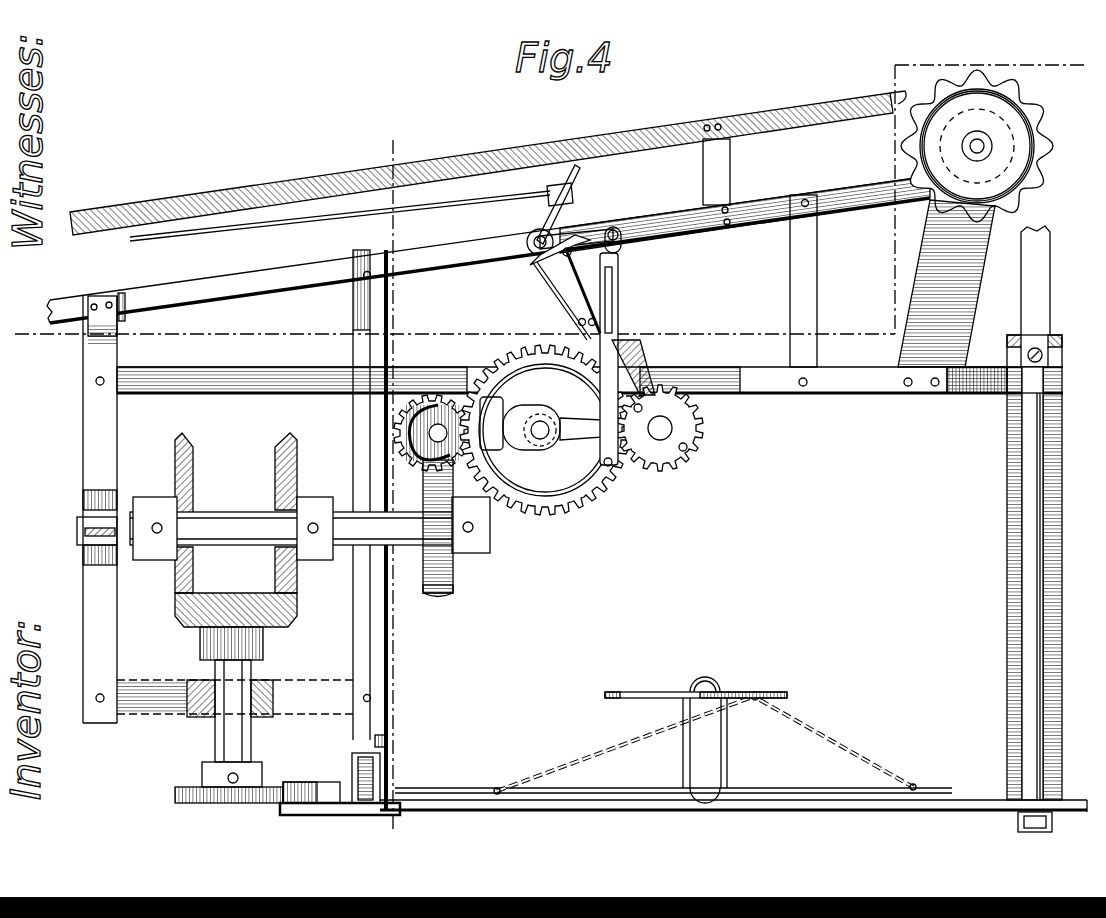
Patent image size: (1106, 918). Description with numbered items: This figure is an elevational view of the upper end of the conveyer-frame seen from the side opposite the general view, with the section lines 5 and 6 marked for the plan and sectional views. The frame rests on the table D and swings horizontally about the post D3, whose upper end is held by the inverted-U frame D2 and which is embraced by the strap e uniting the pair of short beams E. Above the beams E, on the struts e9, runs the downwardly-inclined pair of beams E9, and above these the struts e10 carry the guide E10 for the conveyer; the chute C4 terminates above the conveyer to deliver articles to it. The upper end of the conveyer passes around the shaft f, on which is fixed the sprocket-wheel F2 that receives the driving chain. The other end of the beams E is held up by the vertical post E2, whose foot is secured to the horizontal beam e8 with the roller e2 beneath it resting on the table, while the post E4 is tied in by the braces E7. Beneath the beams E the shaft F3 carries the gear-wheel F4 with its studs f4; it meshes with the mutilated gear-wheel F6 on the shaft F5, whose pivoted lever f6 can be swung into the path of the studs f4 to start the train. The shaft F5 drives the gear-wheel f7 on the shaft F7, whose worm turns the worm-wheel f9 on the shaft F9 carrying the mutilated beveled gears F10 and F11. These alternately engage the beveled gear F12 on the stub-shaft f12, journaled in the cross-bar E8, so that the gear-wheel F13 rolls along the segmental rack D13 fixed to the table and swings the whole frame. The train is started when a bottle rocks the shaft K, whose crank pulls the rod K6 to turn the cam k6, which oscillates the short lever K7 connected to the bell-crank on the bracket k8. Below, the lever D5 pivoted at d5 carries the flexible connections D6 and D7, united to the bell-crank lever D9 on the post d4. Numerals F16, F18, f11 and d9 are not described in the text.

The guide E10 is at (333, 153).
The rod K6 is at (297, 222).
The section line 6 6 is at (423, 147).
The pair of beams E9 is at (313, 277).
The struts e9 is at (117, 355).
The struts e10 is at (728, 163).
The section line 5 5 is at (1090, 42).
The post E4 is at (93, 457).
The vertical post E2 is at (383, 637).
The pair of short beams E is at (793, 410).
The sprocket-wheel F2 is at (1037, 113).
The shaft f is at (977, 146).
The chute C4 is at (1043, 288).
The frame D2 is at (1007, 477).
The post D3 is at (1030, 522).
The strap e is at (987, 393).
The mutilated beveled gear F10 is at (207, 427).
The mutilated beveled gear F11 is at (283, 447).
The beveled gear F12 is at (247, 580).
The shaft F9 is at (228, 520).
The shaft bearing on upright F16 is at (87, 527).
The stub-shaft f12 is at (230, 735).
The cross-bar E8 is at (213, 720).
The braces E7 is at (303, 683).
The gear-wheel F13 is at (175, 797).
The segmental rack D13 is at (290, 780).
The roller e2 is at (352, 763).
The horizontal beam e8 is at (388, 737).
The worm screw F18 is at (413, 470).
The shaft F7 is at (438, 413).
The gear-wheel f7 is at (398, 430).
The gear-wheel F6 is at (553, 478).
The shaft F5 is at (533, 458).
The shaft F3 is at (680, 467).
The gear-wheel F4 is at (696, 417).
The studs f4 is at (686, 449).
The pin f11 is at (642, 408).
The shaft K is at (621, 283).
The lever f6 is at (607, 466).
The short lever K7 is at (600, 236).
The cam k6 is at (532, 238).
The bracket k8 is at (570, 290).
The table D is at (967, 803).
The lever D5 is at (455, 788).
The flexible connection D6 is at (620, 743).
The flexible connection D7 is at (850, 747).
The bell-crank lever D9 is at (657, 662).
The upper pulley d9 is at (712, 677).
The post d4 is at (733, 775).
The fulcrum d5 is at (735, 783).
The worm-wheel f9 is at (453, 580).